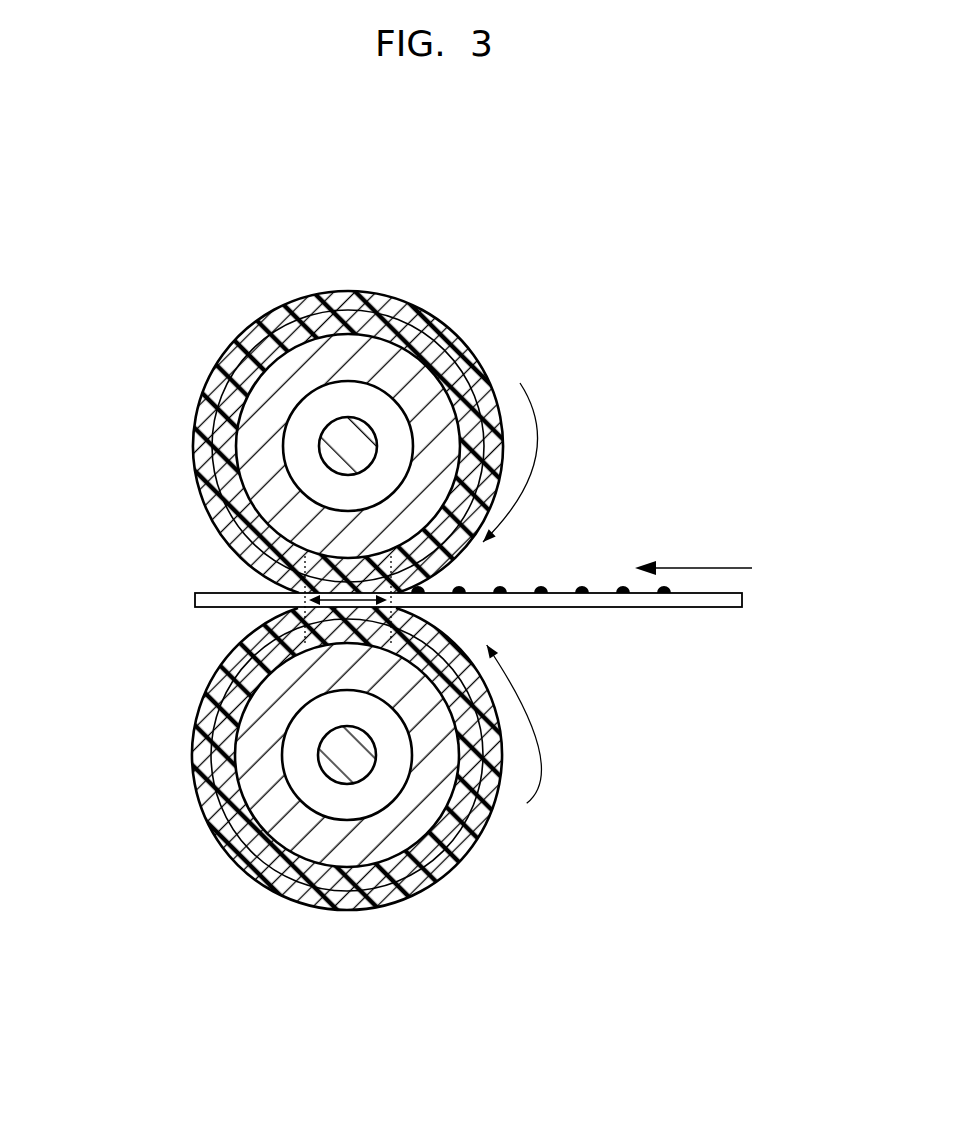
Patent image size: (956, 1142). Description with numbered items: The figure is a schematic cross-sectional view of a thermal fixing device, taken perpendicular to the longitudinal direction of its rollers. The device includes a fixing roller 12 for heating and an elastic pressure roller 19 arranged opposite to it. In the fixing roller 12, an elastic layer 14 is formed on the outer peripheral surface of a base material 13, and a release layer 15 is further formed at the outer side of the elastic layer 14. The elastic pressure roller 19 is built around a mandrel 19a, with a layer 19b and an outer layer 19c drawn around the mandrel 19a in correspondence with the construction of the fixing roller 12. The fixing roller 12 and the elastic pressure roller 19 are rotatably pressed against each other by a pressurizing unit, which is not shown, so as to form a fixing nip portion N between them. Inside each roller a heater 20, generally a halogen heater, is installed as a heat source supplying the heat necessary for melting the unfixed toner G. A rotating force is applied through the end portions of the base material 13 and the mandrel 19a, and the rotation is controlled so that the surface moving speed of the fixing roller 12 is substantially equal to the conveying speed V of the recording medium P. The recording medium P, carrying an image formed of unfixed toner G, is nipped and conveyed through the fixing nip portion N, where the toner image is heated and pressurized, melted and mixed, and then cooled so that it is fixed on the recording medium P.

The fixing roller 12 is at (283, 446).
The base material 13 is at (307, 446).
The elastic layer 14 is at (220, 440).
The release layer 15 is at (205, 398).
The elastic pressure roller 19 is at (273, 755).
The mandrel 19a is at (265, 795).
The elastic layer of pressure roller 19b is at (215, 750).
The release layer of pressure roller 19c is at (205, 708).
The heater 20 is at (348, 446).
The fixing nip portion N is at (337, 602).
The recording medium P is at (622, 608).
The unfixed toner G is at (540, 589).
The conveying speed V is at (693, 558).